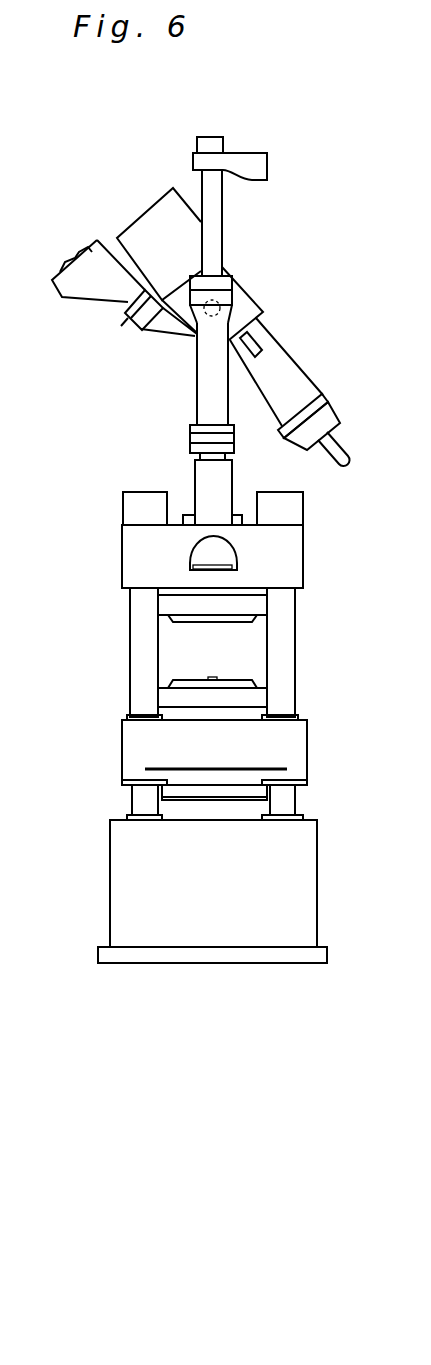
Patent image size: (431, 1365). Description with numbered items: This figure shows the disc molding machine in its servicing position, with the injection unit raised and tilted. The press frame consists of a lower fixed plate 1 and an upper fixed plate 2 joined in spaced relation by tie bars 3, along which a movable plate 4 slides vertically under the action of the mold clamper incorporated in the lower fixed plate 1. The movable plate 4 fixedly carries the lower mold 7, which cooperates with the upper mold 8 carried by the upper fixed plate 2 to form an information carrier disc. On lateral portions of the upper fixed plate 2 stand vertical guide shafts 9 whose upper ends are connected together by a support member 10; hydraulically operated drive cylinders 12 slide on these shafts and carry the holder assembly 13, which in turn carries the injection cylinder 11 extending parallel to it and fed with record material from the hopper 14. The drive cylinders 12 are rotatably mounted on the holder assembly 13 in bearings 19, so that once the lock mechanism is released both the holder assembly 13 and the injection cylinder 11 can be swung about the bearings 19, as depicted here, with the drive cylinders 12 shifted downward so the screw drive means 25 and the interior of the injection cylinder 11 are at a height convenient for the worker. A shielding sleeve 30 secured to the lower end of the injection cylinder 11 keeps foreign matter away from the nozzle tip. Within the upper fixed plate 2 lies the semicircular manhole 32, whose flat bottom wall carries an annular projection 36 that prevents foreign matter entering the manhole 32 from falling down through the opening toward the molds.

The lower fixed plate 1 is at (305, 880).
The upper fixed plate 2 is at (298, 545).
The tie bars 3 is at (285, 657).
The movable plate 4 is at (293, 745).
The lower mold 7 is at (260, 697).
The upper mold 8 is at (257, 607).
The guide shaft 9 is at (217, 222).
The support member 10 is at (255, 168).
The injection cylinder 11 is at (293, 387).
The drive cylinder 12 is at (190, 420).
The holder assembly 13 is at (240, 295).
The hopper 14 is at (78, 283).
The bearing 19 is at (298, 303).
The screw drive means 25 is at (140, 231).
The shielding sleeve 30 is at (325, 418).
The manhole 32 is at (237, 555).
The annular projection 36 is at (223, 557).